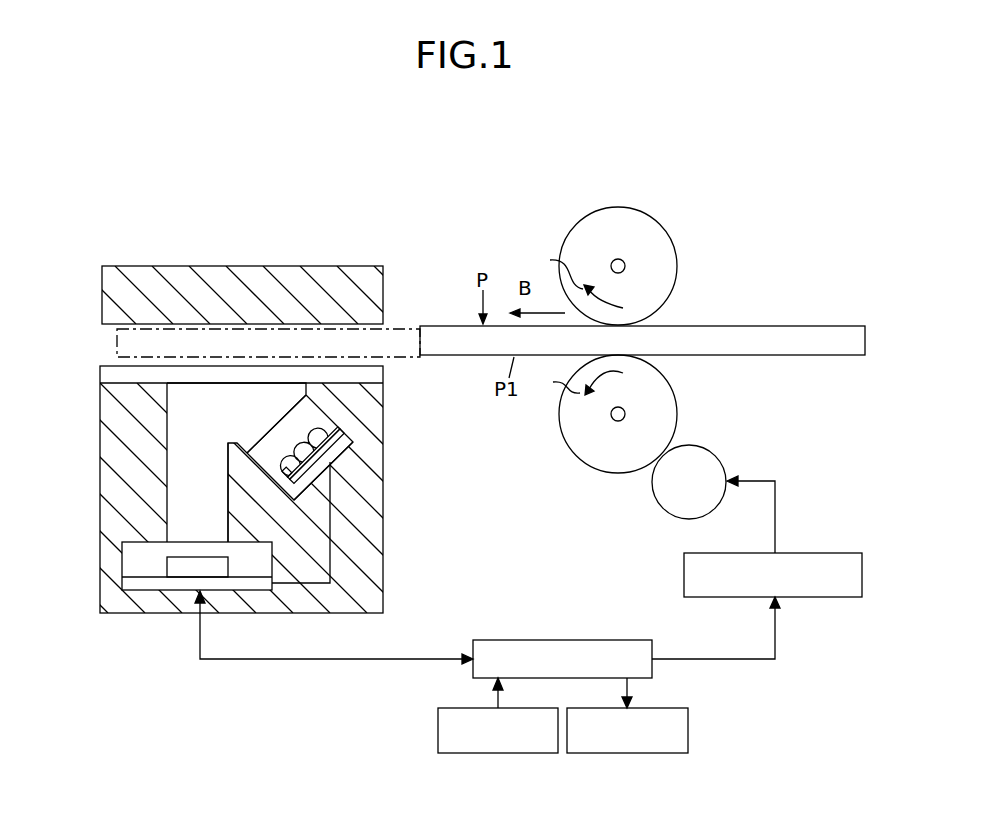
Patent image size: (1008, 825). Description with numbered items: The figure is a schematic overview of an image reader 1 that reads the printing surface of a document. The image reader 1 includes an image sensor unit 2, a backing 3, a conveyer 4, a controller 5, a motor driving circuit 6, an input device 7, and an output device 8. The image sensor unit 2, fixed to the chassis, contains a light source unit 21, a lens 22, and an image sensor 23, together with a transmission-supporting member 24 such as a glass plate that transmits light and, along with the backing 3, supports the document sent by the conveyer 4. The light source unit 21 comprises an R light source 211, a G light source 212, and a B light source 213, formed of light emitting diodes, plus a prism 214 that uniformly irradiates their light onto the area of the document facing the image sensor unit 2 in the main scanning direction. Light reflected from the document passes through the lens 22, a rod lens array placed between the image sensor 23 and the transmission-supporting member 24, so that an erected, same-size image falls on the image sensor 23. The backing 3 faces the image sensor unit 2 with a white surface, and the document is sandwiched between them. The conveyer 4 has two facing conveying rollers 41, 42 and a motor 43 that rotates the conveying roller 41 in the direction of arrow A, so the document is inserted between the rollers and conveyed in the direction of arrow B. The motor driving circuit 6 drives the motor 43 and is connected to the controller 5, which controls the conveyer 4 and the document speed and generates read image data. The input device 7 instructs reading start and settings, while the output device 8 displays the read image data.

The image reader 1 is at (106, 124).
The image sensor unit 2 is at (294, 504).
The backing 3 is at (190, 260).
The conveyer 4 is at (631, 315).
The controller 5 is at (562, 638).
The motor driving circuit 6 is at (822, 553).
The input device 7 is at (438, 727).
The output device 8 is at (688, 725).
The light source unit 21 is at (349, 444).
The lens 22 is at (175, 490).
The image sensor 23 is at (133, 576).
The transmission-supporting member 24 is at (112, 377).
The conveying roller 41 is at (667, 397).
The conveying roller 42 is at (669, 248).
The motor 43 is at (710, 458).
The R light source 211 is at (351, 437).
The G light source 212 is at (330, 468).
The B light source 213 is at (290, 462).
The prism 214 is at (312, 415).